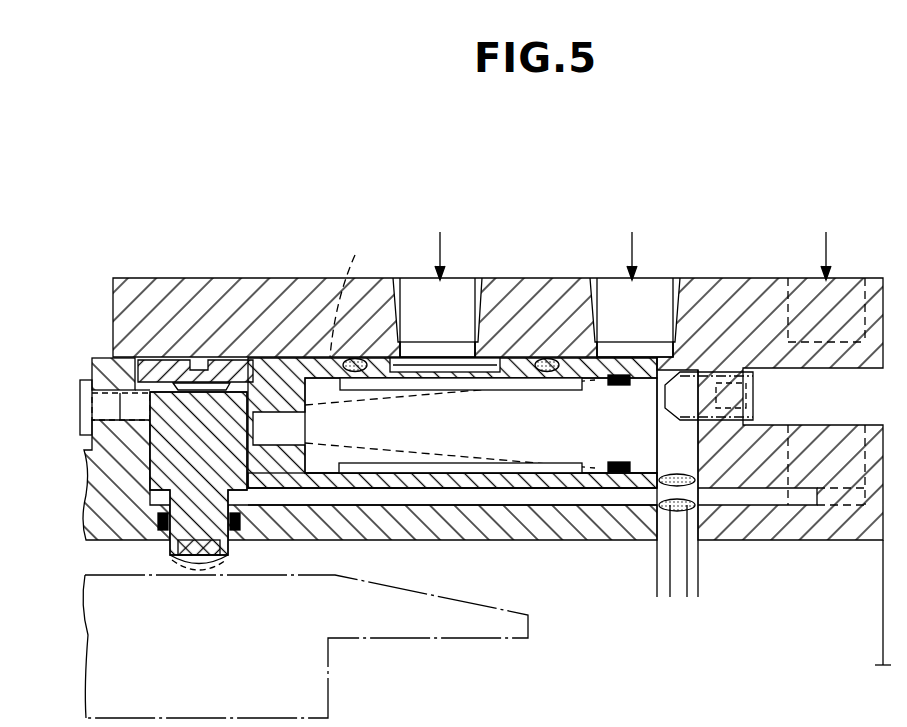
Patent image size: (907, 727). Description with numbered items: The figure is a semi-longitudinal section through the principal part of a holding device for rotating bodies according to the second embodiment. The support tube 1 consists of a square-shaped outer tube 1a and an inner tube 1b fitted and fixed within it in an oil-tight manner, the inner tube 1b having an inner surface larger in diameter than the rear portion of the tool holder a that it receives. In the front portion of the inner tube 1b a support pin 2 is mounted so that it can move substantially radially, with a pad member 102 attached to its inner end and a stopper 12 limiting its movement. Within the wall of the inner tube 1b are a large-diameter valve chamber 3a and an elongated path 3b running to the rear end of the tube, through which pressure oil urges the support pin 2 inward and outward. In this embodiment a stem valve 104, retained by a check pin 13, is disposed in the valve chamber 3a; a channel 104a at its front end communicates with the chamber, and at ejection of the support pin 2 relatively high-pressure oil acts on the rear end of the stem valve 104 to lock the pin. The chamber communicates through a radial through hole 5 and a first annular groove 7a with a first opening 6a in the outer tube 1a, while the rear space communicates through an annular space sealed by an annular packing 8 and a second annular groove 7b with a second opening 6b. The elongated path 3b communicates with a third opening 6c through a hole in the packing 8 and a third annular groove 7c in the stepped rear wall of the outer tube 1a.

The support tube 1 is at (328, 268).
The outer tube 1a is at (243, 300).
The inner tube 1b is at (565, 518).
The support pin 2 is at (185, 540).
The valve chamber 3a is at (282, 453).
The elongated path 3b is at (463, 500).
The radial through hole 5 is at (487, 370).
The first opening 6a is at (453, 298).
The second opening 6b is at (653, 303).
The third opening 6c is at (843, 300).
The first annular groove 7a is at (478, 358).
The second annular groove 7b is at (680, 355).
The third annular groove 7c is at (767, 498).
The annular packing 8 is at (662, 568).
The stopper 12 is at (172, 378).
The check pin 13 is at (745, 395).
The pad member 102 is at (199, 555).
The stem valve 104 is at (526, 423).
The channel 104a is at (368, 290).
The tool holder a is at (298, 665).